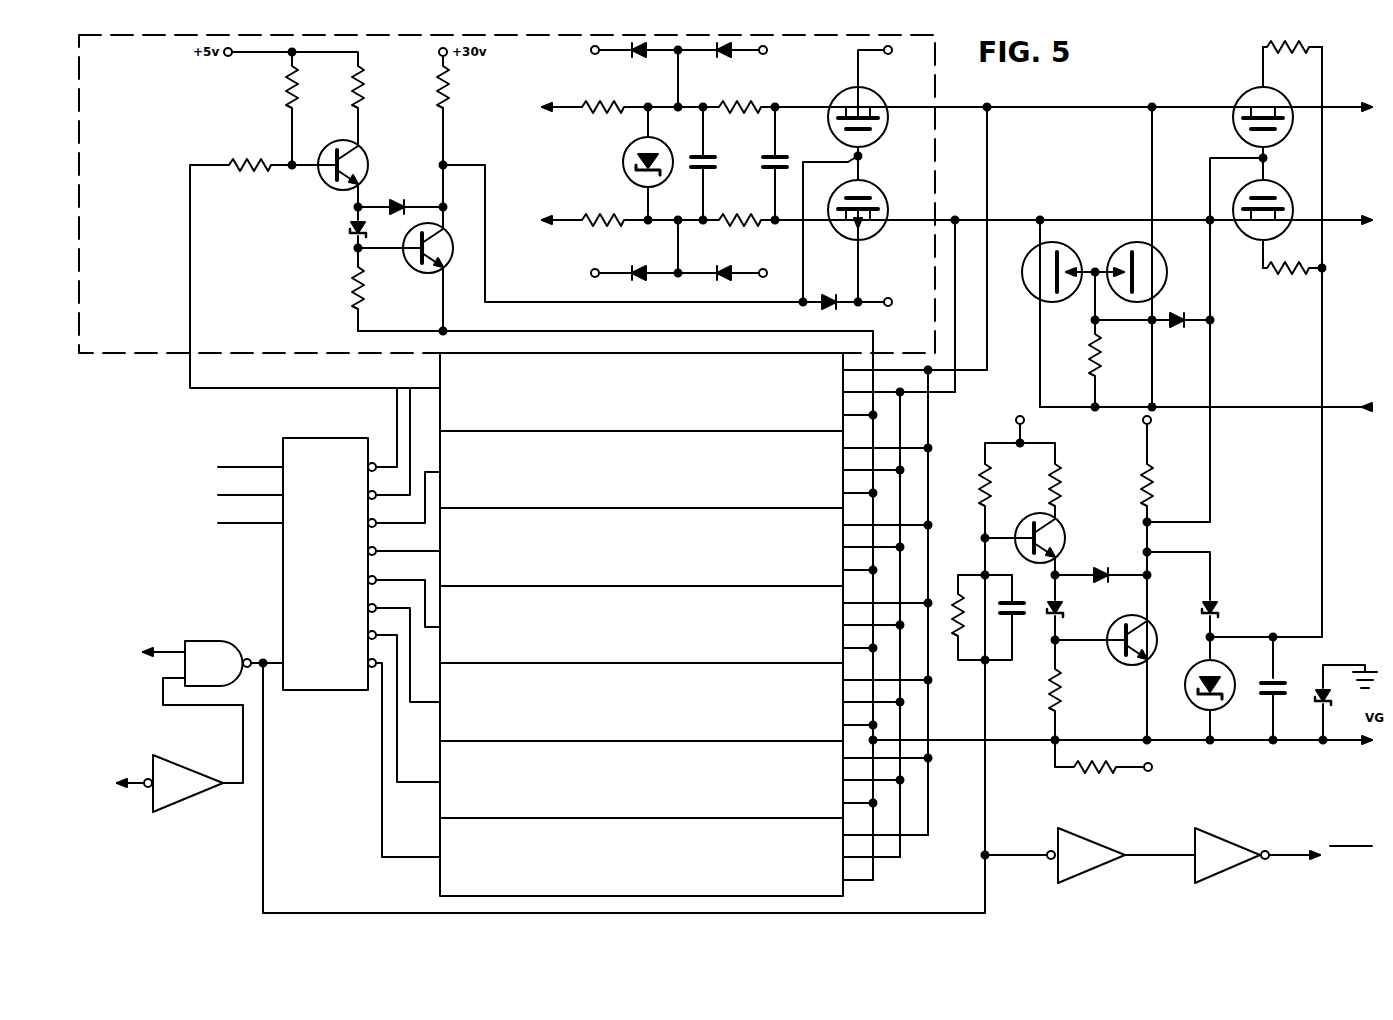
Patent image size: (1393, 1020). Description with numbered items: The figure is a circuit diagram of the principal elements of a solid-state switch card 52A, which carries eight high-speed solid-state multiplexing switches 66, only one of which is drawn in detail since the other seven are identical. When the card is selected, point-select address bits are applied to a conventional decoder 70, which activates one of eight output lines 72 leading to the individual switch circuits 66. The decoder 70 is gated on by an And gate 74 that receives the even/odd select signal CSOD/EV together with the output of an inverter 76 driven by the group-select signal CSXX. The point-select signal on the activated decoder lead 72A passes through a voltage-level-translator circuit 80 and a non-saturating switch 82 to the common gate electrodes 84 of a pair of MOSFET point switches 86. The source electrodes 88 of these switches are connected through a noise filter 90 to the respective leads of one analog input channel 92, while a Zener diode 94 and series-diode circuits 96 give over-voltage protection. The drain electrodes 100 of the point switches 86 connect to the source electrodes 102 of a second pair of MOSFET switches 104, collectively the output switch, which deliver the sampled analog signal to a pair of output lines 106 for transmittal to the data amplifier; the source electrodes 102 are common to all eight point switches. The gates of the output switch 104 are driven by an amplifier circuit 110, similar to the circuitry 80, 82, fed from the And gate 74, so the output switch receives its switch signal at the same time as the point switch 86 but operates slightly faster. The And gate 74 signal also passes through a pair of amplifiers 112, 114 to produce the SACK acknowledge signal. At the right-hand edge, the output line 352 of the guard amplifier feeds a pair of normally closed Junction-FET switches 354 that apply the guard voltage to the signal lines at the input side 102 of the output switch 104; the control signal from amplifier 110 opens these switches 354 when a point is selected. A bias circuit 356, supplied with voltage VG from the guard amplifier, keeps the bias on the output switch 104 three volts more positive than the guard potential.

The switch card 52A is at (195, 850).
The solid-state multiplexing switches 66 is at (103, 362).
The decoder 70 is at (334, 499).
The output lines 72 is at (383, 436).
The activated decoder lead 72A is at (190, 280).
The And gate 74 is at (220, 675).
The inverter 76 is at (180, 795).
The voltage-level-translator circuit 80 is at (303, 187).
The non-saturating switch 82 is at (407, 304).
The common gate electrodes 84 is at (870, 156).
The MOSFET point switches 86 is at (886, 96).
The source electrodes 88 is at (838, 96).
The noise filter 90 is at (750, 149).
The analog input channel 92 is at (563, 115).
The Zener diode 94 is at (655, 150).
The series-diode circuits 96 is at (620, 62).
The drain electrodes 100 is at (953, 115).
The source electrodes 102 is at (1240, 125).
The MOSFET switches 104 is at (1298, 124).
The output lines 106 is at (1348, 210).
The amplifier circuit 110 is at (1115, 512).
The amplifier 112 is at (1096, 865).
The amplifier 114 is at (1233, 865).
The output line of the guard amplifier 352 is at (1338, 402).
The Junction-FET switches 354 is at (1114, 249).
The bias circuit 356 is at (1266, 667).